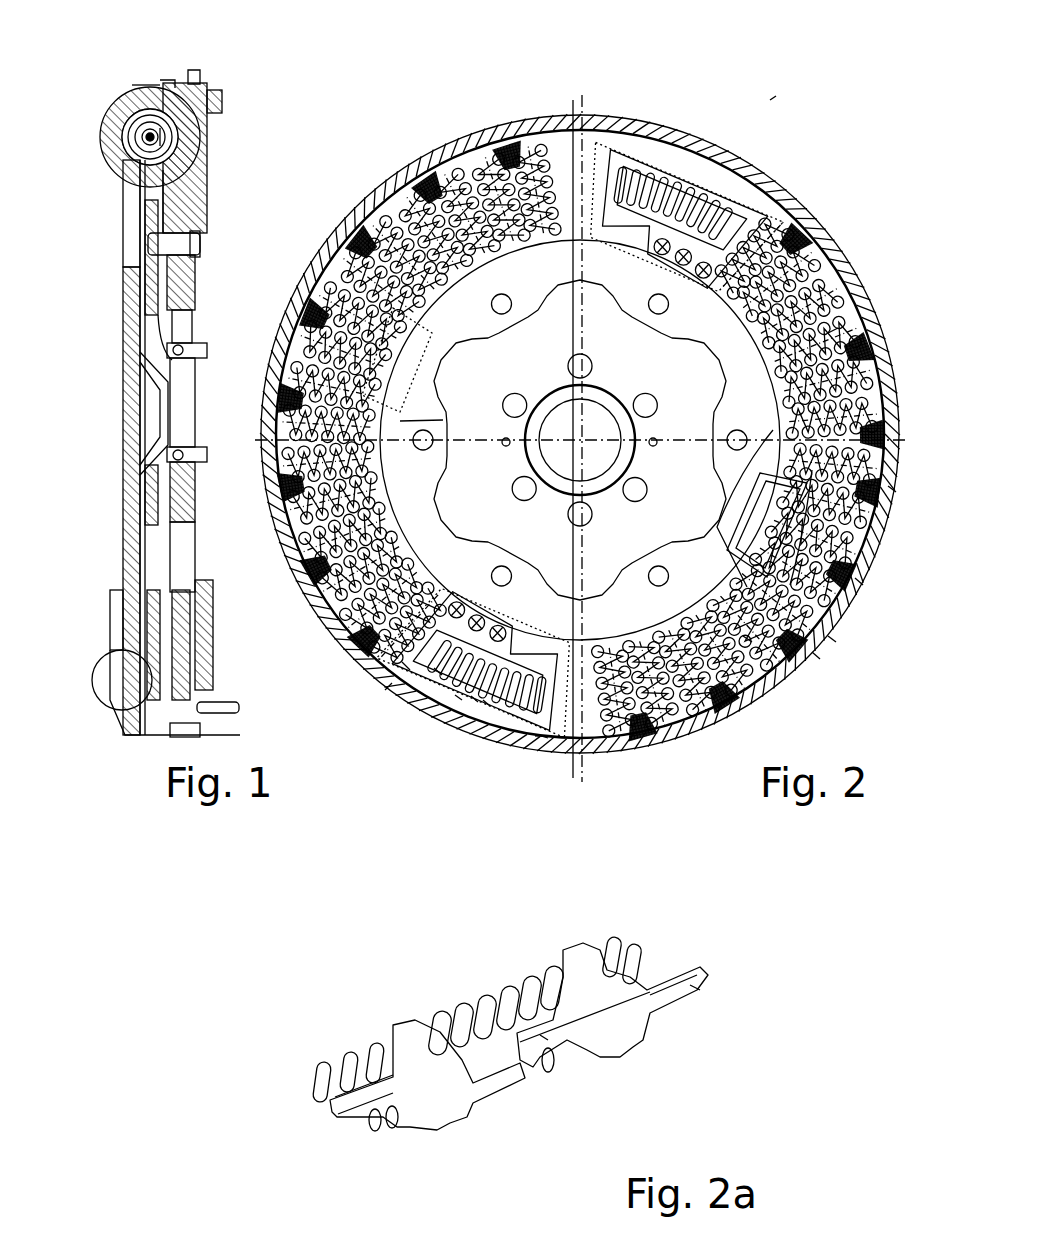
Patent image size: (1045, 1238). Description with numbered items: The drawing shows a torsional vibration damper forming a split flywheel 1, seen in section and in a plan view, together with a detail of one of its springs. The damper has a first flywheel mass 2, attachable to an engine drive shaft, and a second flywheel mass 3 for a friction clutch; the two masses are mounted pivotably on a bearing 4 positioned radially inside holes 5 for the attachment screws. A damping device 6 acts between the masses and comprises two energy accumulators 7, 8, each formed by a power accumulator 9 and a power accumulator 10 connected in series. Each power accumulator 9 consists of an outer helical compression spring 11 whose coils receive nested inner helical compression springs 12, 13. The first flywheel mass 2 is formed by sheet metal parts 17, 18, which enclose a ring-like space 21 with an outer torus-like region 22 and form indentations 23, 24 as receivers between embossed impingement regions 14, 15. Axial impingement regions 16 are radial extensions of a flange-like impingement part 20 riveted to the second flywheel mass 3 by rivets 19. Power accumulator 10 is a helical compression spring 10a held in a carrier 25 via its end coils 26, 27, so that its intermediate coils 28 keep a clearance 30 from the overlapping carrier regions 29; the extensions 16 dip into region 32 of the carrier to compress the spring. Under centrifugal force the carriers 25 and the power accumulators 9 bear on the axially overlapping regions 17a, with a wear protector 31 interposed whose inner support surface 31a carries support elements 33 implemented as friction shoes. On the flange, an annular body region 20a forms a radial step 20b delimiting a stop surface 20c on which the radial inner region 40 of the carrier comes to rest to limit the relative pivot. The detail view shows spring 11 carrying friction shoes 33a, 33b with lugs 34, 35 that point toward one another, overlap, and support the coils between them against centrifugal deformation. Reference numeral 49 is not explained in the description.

In FIG. 1, the split flywheel 1 is at (215, 68).
In FIG. 2, the split flywheel 1 is at (782, 85).
In FIG. 1, the first flywheel mass 2 is at (128, 290).
In FIG. 2, the first flywheel mass 2 is at (600, 128).
In FIG. 1, the second flywheel mass 3 is at (210, 200).
In FIG. 1, the bearing 4 is at (185, 460).
In FIG. 1, the holes 5 is at (140, 470).
In FIG. 1, the damping device 6 is at (113, 125).
In FIG. 2, the damping device 6 is at (520, 125).
In FIG. 2, the energy accumulator 7 is at (362, 690).
In FIG. 1, the energy accumulator 8 is at (125, 137).
In FIG. 2, the energy accumulator 8 is at (812, 212).
In FIG. 1, the power accumulator 9 is at (140, 150).
In FIG. 2, the power accumulator 9 is at (862, 395).
In FIG. 2, the power accumulator 10 is at (665, 175).
In FIG. 2, the helical compression spring 10a is at (685, 248).
In FIG. 2, the helical compression spring 11 is at (835, 330).
In FIG. 2A, the helical compression spring 11 is at (505, 988).
In FIG. 2, the helical compression spring 12 is at (790, 280).
In FIG. 2, the helical compression spring 13 is at (748, 640).
In FIG. 1, the impingement region 14 is at (122, 690).
In FIG. 1, the impingement region 15 is at (175, 672).
In FIG. 1, the impingement region 16 is at (160, 170).
In FIG. 2, the impingement region 16 is at (576, 130).
In FIG. 1, the sheet metal part 17 is at (128, 598).
In FIG. 1, the axially overlapping region 17a is at (140, 82).
In FIG. 2, the axially overlapping region 17a is at (817, 657).
In FIG. 1, the sheet metal part 18 is at (180, 618).
In FIG. 1, the rivets 19 is at (200, 243).
In FIG. 1, the flange-like impingement part 20 is at (150, 210).
In FIG. 2, the flange-like impingement part 20 is at (523, 260).
In FIG. 2, the annular body region 20a is at (457, 312).
In FIG. 2, the radial step 20b is at (300, 348).
In FIG. 2, the stop surface 20c is at (375, 412).
In FIG. 1, the ring-like space 21 is at (175, 195).
In FIG. 1, the torus-like region 22 is at (160, 135).
In FIG. 1, the indentation 23 is at (215, 100).
In FIG. 1, the indentation 24 is at (118, 100).
In FIG. 2, the carrier 25 is at (752, 210).
In FIG. 2, the end coil 26 is at (438, 672).
In FIG. 2, the end coil 27 is at (542, 730).
In FIG. 2, the intermediate coils 28 is at (475, 700).
In FIG. 2, the carrier regions 29 is at (700, 225).
In FIG. 2, the clearance 30 is at (660, 195).
In FIG. 1, the wear protector 31 is at (167, 82).
In FIG. 2, the wear protector 31 is at (893, 490).
In FIG. 2, the support surface 31a is at (860, 583).
In FIG. 2, the region 32 is at (610, 232).
In FIG. 2, the support elements 33 is at (833, 640).
In FIG. 2A, the friction shoe 33a is at (622, 1025).
In FIG. 2A, the friction shoe 33b is at (447, 1098).
In FIG. 2A, the lug 34 is at (690, 985).
In FIG. 2A, the lug 35 is at (370, 1105).
In FIG. 2, the radial inner region 40 is at (455, 600).
In FIG. 2, the leaf spring 49 is at (642, 140).